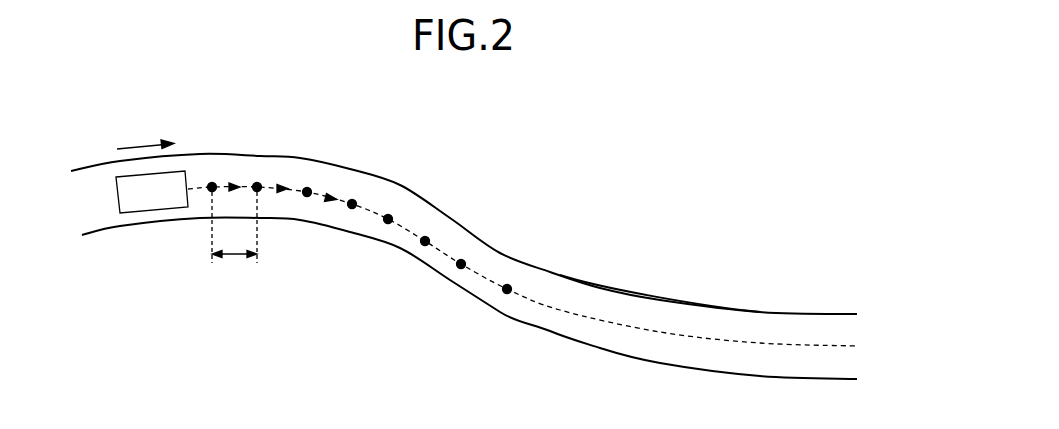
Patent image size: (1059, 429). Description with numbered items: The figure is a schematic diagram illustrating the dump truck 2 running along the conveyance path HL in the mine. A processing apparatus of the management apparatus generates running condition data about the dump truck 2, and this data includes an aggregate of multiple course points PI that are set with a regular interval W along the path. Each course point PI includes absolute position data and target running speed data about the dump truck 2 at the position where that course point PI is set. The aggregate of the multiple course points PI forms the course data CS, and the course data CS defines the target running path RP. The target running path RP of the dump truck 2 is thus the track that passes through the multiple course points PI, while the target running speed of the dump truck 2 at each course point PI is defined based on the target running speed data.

The dump truck 2 is at (155, 213).
The course point PI is at (212, 182).
The target running path RP is at (447, 252).
The course data CS is at (557, 310).
The regular interval W is at (234, 239).
The conveyance path HL is at (635, 310).